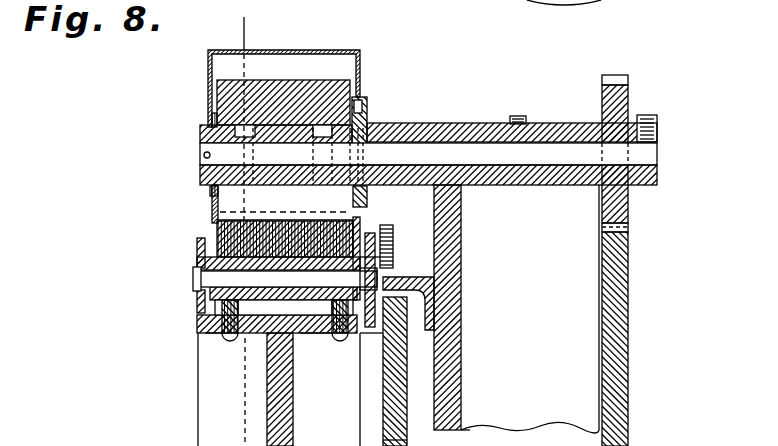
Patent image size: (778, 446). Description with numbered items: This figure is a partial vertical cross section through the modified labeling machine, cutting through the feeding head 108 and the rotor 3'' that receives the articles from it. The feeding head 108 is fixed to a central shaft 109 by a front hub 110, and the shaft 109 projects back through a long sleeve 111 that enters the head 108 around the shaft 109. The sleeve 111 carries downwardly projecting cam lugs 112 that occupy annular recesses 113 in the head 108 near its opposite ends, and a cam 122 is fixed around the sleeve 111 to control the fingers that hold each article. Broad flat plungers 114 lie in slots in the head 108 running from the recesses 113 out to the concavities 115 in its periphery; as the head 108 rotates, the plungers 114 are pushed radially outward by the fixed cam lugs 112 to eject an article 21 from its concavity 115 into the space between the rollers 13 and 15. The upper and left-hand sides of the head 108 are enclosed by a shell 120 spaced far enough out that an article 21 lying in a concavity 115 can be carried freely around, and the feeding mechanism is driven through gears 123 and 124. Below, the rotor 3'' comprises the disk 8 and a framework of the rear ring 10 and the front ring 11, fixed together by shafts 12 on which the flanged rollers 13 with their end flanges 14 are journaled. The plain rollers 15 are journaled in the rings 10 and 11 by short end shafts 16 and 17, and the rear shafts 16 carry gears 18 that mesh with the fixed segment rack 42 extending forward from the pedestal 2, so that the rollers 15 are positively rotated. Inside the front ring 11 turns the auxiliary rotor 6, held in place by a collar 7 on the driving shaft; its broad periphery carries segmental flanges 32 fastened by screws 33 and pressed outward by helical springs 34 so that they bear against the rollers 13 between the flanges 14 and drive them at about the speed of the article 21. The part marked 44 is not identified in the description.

The collar 7 is at (428, 223).
The shell 120 is at (280, 50).
The feeding head 108 is at (389, 223).
The annular recesses 113 is at (212, 118).
The cam 122 is at (367, 106).
The sleeve 111 is at (408, 125).
The front hub 110 is at (200, 134).
The cam lugs 112 is at (210, 194).
The plungers 114 is at (212, 212).
The concavities 115 is at (216, 224).
The article 21 is at (280, 213).
The plain rollers 15 is at (315, 220).
The central shaft 109 is at (493, 165).
The front end shaft 17 is at (197, 250).
The shafts 12 is at (193, 279).
The front ring 11 is at (200, 297).
The auxiliary rotor 6 is at (198, 380).
The lug 44 is at (209, 336).
The screws 33 is at (230, 345).
The helical springs 34 is at (245, 336).
The segmental flanges 32 is at (240, 308).
The flanged rollers 13 is at (318, 334).
The rear ring 10 is at (367, 338).
The disk 8 is at (416, 380).
The rotor 3'' is at (409, 439).
The rear end shaft 16 is at (393, 236).
The gears 18 is at (376, 247).
The flanges 14 is at (366, 259).
The segment rack 42 is at (436, 281).
The gear 124 is at (618, 212).
The gear 123 is at (620, 324).
The pedestal 2 is at (471, 428).